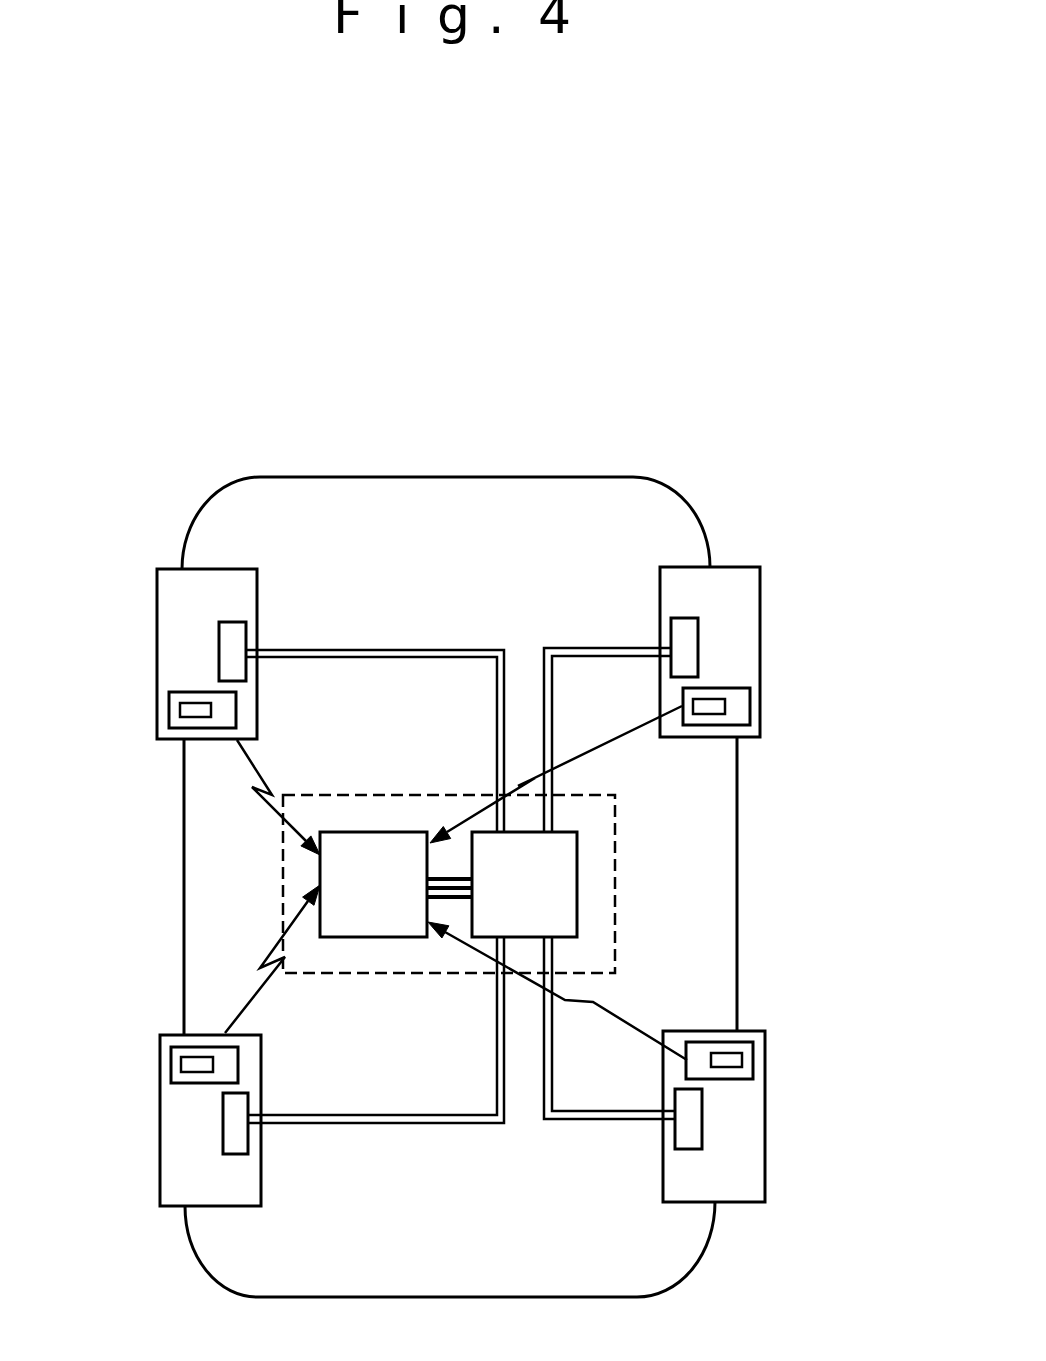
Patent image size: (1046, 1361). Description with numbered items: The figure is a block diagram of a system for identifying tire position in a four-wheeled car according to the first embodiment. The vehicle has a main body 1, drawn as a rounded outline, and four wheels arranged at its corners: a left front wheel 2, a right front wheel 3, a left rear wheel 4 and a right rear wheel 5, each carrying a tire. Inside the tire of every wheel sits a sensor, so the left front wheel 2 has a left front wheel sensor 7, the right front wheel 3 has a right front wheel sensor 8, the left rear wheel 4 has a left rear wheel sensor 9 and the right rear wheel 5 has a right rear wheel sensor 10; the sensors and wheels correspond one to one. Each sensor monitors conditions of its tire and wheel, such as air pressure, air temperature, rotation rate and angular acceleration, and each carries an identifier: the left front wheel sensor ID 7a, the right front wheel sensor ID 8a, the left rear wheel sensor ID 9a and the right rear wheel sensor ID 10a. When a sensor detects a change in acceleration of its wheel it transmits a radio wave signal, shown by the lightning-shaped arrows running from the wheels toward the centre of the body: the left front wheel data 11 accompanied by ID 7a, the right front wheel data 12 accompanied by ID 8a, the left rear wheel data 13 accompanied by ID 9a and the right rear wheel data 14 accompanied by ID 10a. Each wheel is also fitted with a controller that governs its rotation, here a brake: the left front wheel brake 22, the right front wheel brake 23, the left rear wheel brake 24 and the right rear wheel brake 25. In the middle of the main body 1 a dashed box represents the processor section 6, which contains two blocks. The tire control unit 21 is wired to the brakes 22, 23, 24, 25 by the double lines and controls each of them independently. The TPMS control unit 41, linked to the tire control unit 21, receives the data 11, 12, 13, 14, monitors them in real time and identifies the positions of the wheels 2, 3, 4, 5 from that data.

The main body 1 is at (432, 477).
The left front wheel 2 is at (170, 569).
The right front wheel 3 is at (748, 567).
The left rear wheel 4 is at (172, 1206).
The right rear wheel 5 is at (753, 1205).
The processor section 6 is at (617, 896).
The left front wheel sensor 7 is at (169, 710).
The left front wheel sensor ID 7a is at (193, 703).
The right front wheel sensor 8 is at (750, 706).
The right front wheel sensor ID 8a is at (708, 699).
The left rear wheel sensor 9 is at (171, 1065).
The left rear wheel sensor ID 9a is at (197, 1073).
The right rear wheel sensor 10 is at (753, 1060).
The right rear wheel sensor ID 10a is at (717, 1068).
The left front wheel data 11 is at (258, 797).
The right front wheel data 12 is at (620, 735).
The left rear wheel data 13 is at (268, 950).
The right rear wheel data 14 is at (627, 1032).
The tire control unit 21 is at (577, 852).
The left front wheel brake 22 is at (228, 622).
The right front wheel brake 23 is at (680, 618).
The left rear wheel brake 24 is at (240, 1155).
The right rear wheel brake 25 is at (687, 1150).
The TPMS control unit 41 is at (377, 938).